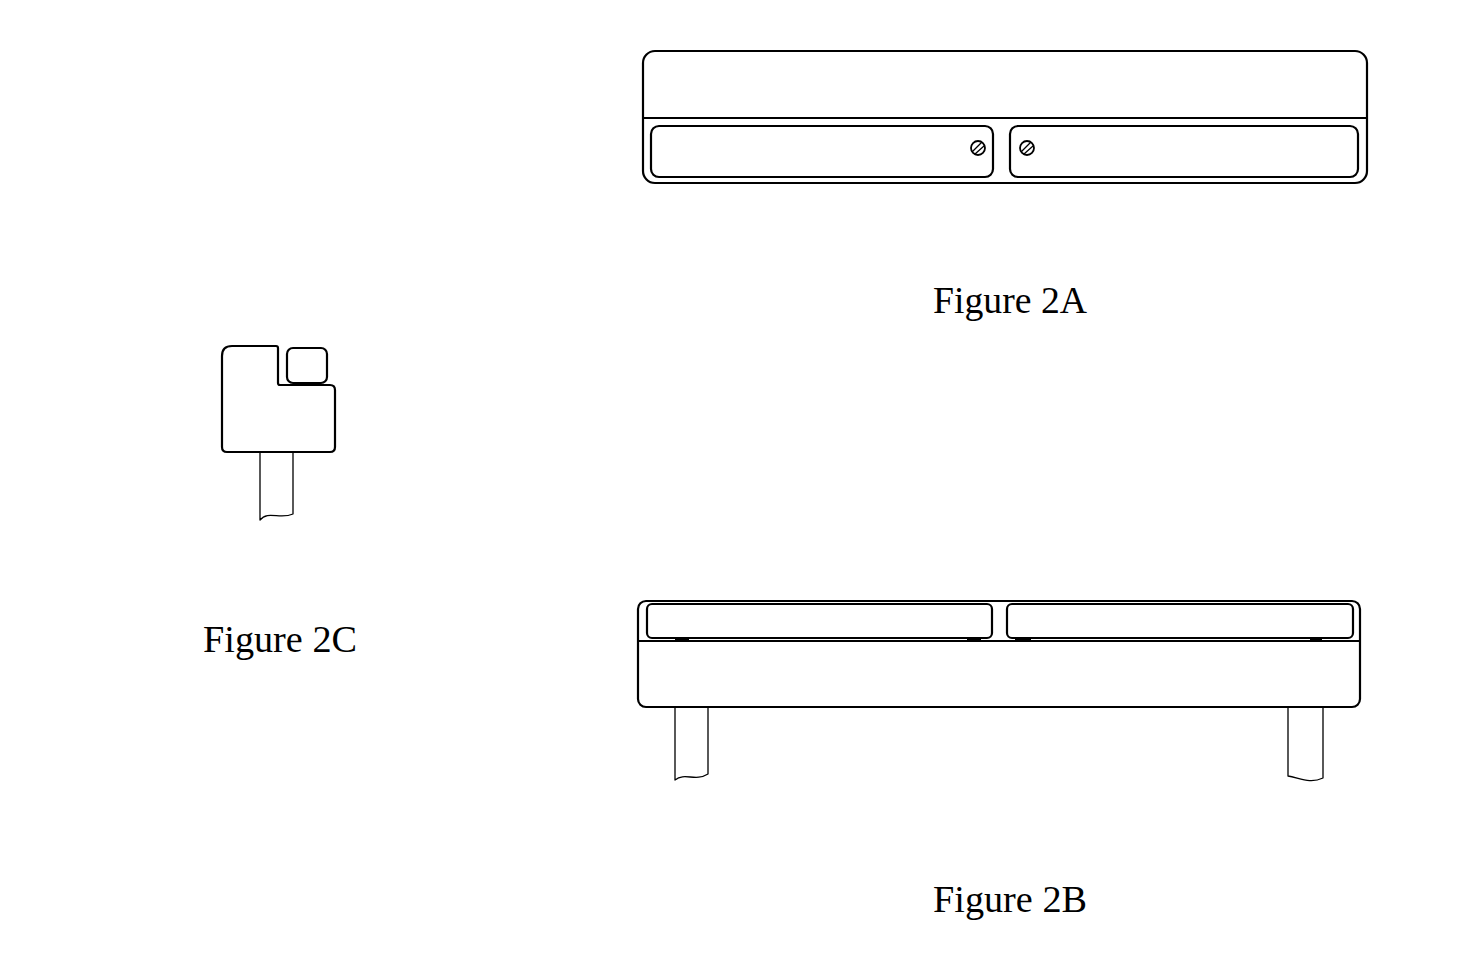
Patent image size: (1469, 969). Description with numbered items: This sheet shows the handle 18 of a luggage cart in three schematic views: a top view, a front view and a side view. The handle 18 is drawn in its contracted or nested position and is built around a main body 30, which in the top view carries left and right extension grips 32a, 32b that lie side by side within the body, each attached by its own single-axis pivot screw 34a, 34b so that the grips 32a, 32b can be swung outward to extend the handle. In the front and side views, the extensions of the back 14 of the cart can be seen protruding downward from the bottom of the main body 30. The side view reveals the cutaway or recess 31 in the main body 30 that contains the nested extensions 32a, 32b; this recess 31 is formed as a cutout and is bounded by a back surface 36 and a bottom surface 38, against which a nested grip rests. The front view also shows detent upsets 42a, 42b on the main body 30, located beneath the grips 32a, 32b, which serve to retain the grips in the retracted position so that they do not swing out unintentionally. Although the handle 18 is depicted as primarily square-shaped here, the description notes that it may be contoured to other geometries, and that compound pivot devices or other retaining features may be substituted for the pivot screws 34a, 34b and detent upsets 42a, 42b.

In FIG. 2B, the back 14 is at (690, 760).
In FIG. 2C, the back 14 is at (287, 500).
In FIG. 2A, the handle 18 is at (804, 215).
In FIG. 2B, the handle 18 is at (1163, 558).
In FIG. 2A, the main body 30 is at (665, 98).
In FIG. 2B, the main body 30 is at (650, 675).
In FIG. 2C, the main body 30 is at (318, 437).
In FIG. 2A, the recess 31 is at (648, 123).
In FIG. 2B, the recess 31 is at (640, 612).
In FIG. 2C, the recess 31 is at (288, 336).
In FIG. 2A, the left extension grip 32a is at (663, 163).
In FIG. 2B, the left extension grip 32a is at (762, 615).
In FIG. 2C, the left extension grip 32a is at (303, 367).
In FIG. 2A, the right extension grip 32b is at (1280, 155).
In FIG. 2B, the right extension grip 32b is at (1258, 615).
In FIG. 2C, the right extension grip 32b is at (307, 365).
In FIG. 2A, the pivot screw 34a is at (967, 158).
In FIG. 2A, the pivot screw 34b is at (1031, 157).
In FIG. 2A, the back surface 36 is at (1315, 112).
In FIG. 2C, the back surface 36 is at (277, 363).
In FIG. 2B, the bottom surface 38 is at (833, 642).
In FIG. 2C, the bottom surface 38 is at (290, 387).
In FIG. 2B, the detent upset 42a is at (683, 645).
In FIG. 2B, the detent upset 42b is at (1318, 642).